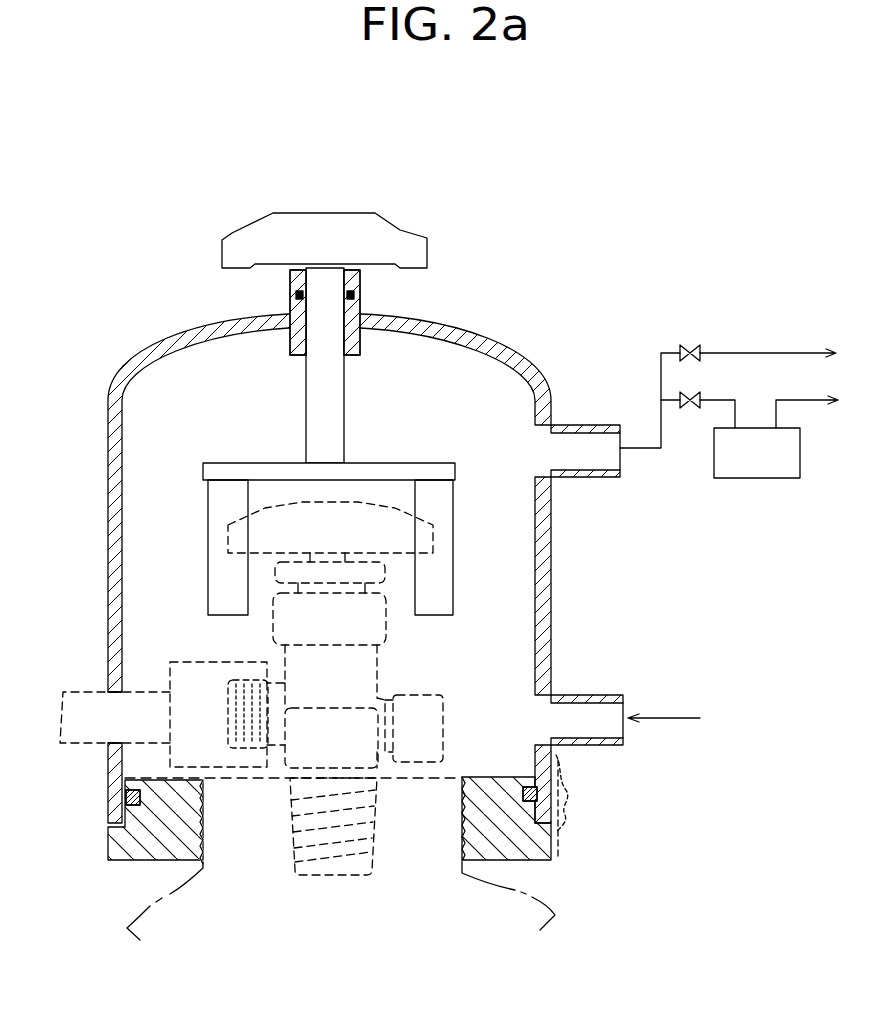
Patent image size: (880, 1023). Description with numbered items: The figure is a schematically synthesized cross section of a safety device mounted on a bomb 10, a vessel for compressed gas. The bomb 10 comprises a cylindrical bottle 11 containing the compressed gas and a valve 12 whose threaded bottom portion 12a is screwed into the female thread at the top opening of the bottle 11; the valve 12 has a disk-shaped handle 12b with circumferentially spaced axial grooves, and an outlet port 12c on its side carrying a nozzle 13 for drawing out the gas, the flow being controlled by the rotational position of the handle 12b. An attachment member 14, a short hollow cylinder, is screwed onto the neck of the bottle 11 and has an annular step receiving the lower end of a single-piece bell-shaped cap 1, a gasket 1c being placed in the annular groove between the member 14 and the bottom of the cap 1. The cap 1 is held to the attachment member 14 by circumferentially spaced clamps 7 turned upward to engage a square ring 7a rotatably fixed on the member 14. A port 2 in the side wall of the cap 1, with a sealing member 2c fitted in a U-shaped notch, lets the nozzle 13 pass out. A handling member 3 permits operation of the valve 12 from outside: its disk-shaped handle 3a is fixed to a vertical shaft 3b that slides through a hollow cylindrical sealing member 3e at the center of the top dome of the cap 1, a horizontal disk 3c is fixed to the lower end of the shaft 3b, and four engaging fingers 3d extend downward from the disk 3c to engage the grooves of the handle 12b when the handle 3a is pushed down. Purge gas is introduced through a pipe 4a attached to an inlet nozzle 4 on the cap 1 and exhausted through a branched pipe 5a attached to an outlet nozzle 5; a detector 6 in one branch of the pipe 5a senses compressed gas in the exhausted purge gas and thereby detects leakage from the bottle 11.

The bell-shaped cap 1 is at (108, 403).
The gasket 1c is at (128, 800).
The port 2 is at (92, 678).
The sealing member 2c is at (108, 752).
The handling member 3 is at (405, 291).
The disk-shaped handle 3a is at (359, 226).
The shaft 3b is at (313, 380).
The horizontal disk 3c is at (232, 470).
The engaging fingers 3d is at (213, 505).
The cylindrical sealing member 3e is at (292, 296).
The purge gas inlet nozzle 4 is at (606, 695).
The pipe 4a is at (688, 720).
The purge gas outlet nozzle 5 is at (587, 425).
The branched pipe 5a is at (653, 450).
The detector 6 is at (760, 478).
The clamps 7 is at (568, 783).
The square ring 7a is at (563, 815).
The bomb 10 is at (578, 918).
The cylindrical bottle 11 is at (540, 898).
The valve 12 is at (424, 646).
The threaded bottom portion 12a is at (335, 854).
The disk-shaped handle 12b is at (407, 532).
The outlet port 12c is at (248, 696).
The nozzle 13 is at (147, 703).
The attachment member 14 is at (137, 830).